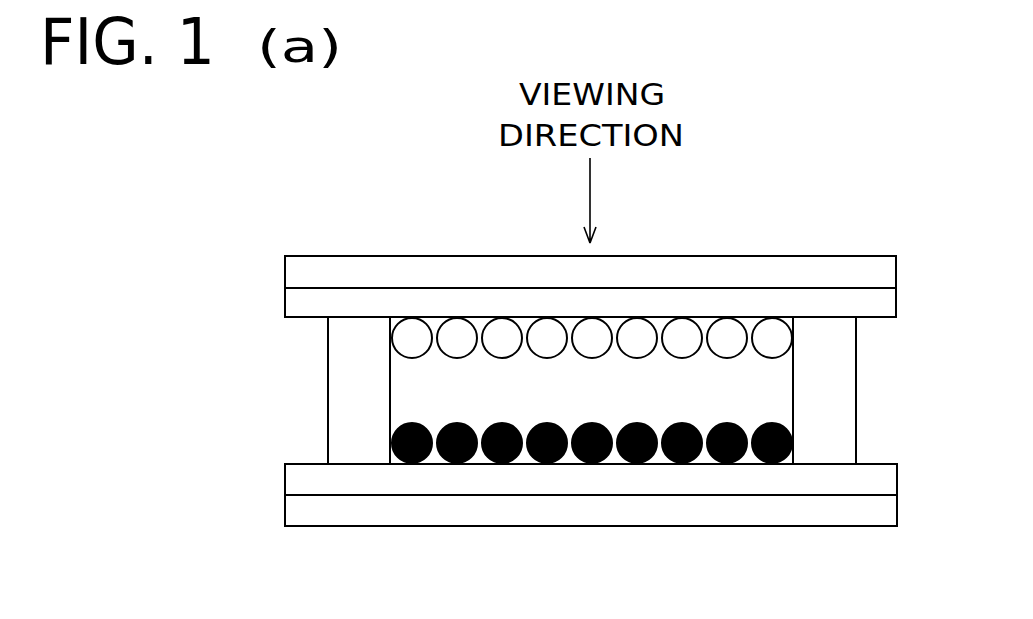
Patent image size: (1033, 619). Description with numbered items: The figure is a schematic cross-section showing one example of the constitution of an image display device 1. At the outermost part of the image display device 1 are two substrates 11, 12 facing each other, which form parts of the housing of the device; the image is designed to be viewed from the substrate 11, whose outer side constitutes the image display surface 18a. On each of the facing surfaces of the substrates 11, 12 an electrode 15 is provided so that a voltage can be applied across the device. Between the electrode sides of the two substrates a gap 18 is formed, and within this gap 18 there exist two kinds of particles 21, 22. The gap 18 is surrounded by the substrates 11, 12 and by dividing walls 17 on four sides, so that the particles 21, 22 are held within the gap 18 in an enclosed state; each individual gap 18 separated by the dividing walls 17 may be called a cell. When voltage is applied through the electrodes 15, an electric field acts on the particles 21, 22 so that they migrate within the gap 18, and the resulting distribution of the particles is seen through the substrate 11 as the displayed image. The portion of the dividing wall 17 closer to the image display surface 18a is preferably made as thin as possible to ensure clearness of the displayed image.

The image display device 1 is at (856, 200).
The substrate 11 is at (290, 270).
The substrate 12 is at (290, 510).
The electrode 15 is at (290, 300).
The dividing wall 17 is at (360, 443).
The gap 18 is at (765, 394).
The image display surface 18a is at (768, 255).
The particles 21 is at (685, 464).
The particles 22 is at (683, 330).